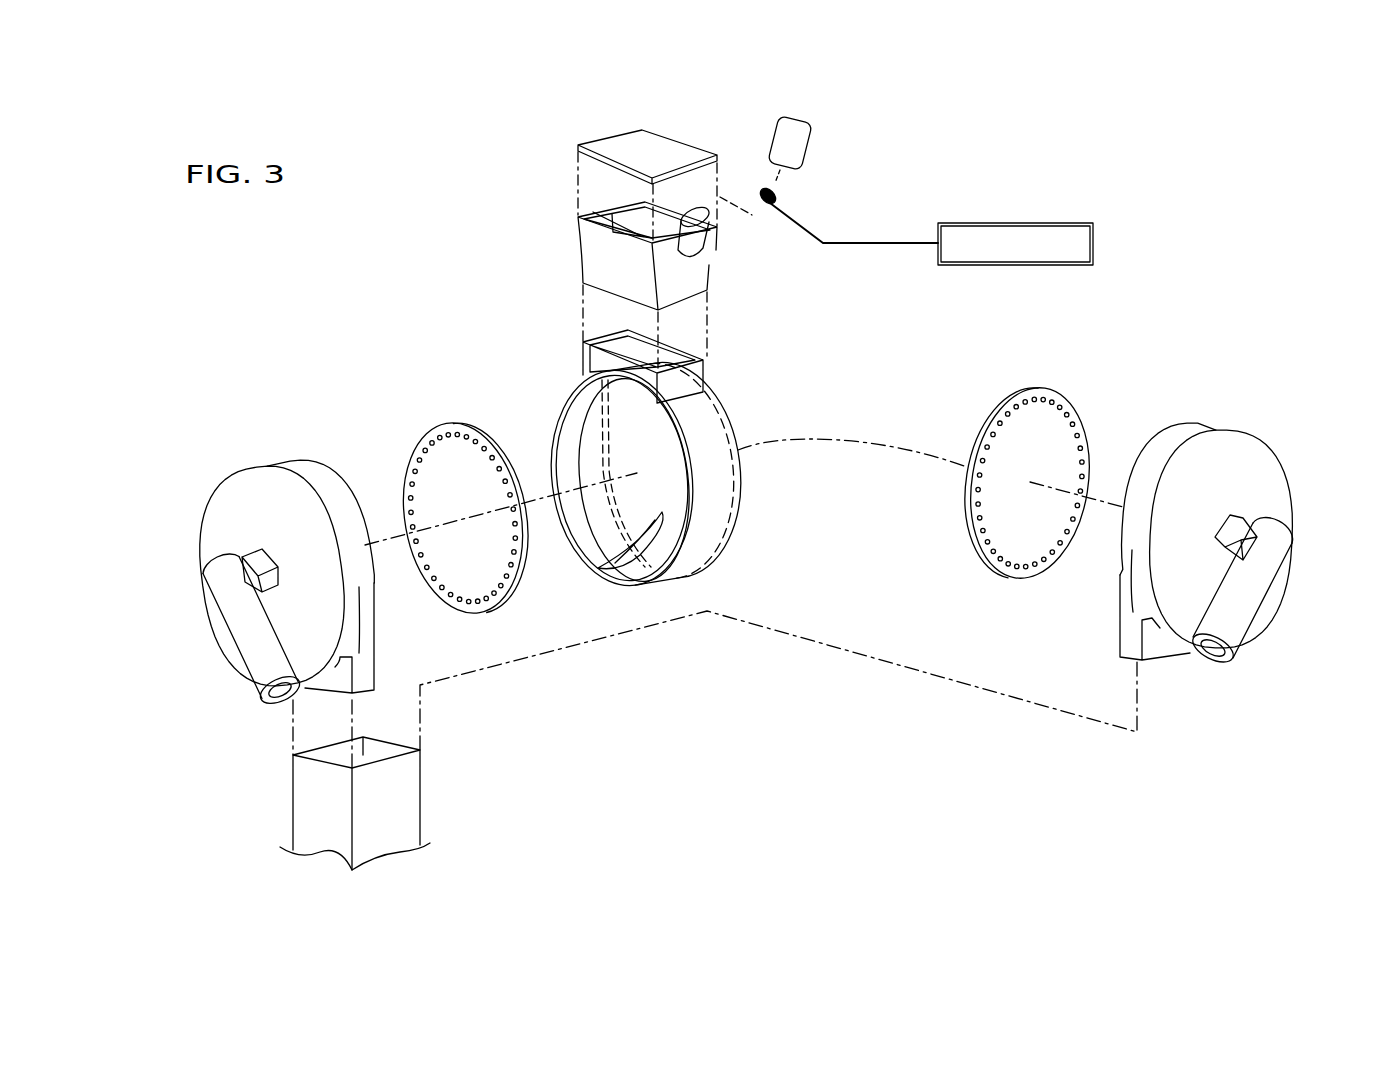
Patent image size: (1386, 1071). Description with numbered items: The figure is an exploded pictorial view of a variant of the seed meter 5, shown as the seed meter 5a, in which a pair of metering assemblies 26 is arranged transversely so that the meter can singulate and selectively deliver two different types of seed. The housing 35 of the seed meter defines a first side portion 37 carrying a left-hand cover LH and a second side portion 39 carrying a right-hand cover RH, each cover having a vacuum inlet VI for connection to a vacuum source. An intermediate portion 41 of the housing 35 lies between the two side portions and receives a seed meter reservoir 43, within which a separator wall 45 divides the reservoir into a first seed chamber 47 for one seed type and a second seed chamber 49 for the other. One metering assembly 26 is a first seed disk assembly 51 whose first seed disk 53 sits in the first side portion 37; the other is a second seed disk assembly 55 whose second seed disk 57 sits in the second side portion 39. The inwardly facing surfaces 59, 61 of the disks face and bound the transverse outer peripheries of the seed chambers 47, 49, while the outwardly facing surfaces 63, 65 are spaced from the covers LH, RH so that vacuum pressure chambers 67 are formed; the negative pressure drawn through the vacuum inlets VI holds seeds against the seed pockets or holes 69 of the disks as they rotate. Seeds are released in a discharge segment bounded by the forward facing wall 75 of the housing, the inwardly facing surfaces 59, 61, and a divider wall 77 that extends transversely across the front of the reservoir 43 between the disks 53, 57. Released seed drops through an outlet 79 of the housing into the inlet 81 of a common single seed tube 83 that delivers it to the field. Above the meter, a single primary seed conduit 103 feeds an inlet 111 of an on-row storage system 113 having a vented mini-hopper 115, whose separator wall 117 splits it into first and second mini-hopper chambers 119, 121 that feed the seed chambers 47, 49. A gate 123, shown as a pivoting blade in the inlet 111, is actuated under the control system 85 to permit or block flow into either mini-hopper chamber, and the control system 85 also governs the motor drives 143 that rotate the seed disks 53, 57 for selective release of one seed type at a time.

The seed meter 5 is at (1135, 200).
The seed meter 5a is at (1148, 270).
The metering assemblies 26 is at (415, 390).
The housing 35 is at (1305, 305).
The first side portion 37 is at (1225, 348).
The second side portion 39 is at (343, 430).
The intermediate portion 41 is at (727, 392).
The seed meter reservoir 43 is at (560, 415).
The separator wall 45 is at (634, 480).
The first seed chamber 47 is at (720, 422).
The second seed chamber 49 is at (570, 460).
The first seed disk assembly 51 is at (1068, 382).
The first seed disk 53 is at (1012, 400).
The second seed disk assembly 55 is at (462, 420).
The second seed disk 57 is at (413, 448).
The inwardly facing surface 59 is at (966, 540).
The inwardly facing surface 61 is at (527, 572).
The outwardly facing surface 63 is at (1020, 545).
The outwardly facing surface 65 is at (452, 578).
The vacuum pressure chamber 67 is at (215, 528).
The seed pockets and/or holes 69 is at (415, 490).
The forward facing wall 75 is at (367, 650).
The divider wall 77 is at (612, 568).
The outlet 79 is at (330, 695).
The inlet 81 is at (383, 748).
The seed tube 83 is at (292, 798).
The control system 85 is at (1010, 222).
The primary seed conduit 103 is at (810, 152).
The inlet 111 is at (688, 258).
The on-row storage system 113 is at (540, 175).
The mini-hopper 115 is at (583, 253).
The separator wall 117 is at (620, 217).
The first mini-hopper chamber 119 is at (668, 218).
The second mini-hopper chamber 121 is at (595, 215).
The gate 123 is at (760, 212).
The motor drives 143 is at (268, 565).
The right-hand cover RH is at (225, 470).
The left-hand cover LH is at (1268, 435).
The vacuum inlet VI is at (225, 590).